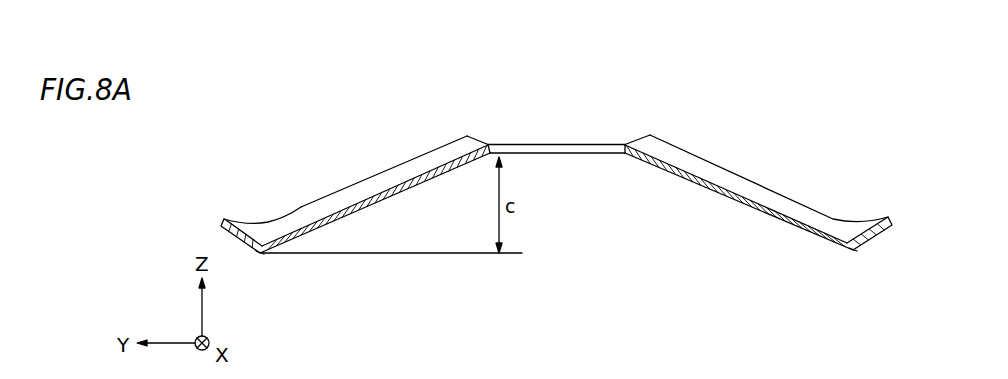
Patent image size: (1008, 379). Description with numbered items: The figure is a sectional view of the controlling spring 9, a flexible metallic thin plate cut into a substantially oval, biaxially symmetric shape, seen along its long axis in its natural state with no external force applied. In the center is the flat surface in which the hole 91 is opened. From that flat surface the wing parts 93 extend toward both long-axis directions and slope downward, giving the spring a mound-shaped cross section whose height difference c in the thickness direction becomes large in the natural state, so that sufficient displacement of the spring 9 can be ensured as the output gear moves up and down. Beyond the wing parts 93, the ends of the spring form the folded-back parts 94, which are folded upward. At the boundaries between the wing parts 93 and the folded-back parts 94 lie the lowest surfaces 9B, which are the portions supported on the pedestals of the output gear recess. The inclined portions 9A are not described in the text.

The controlling spring 9 is at (300, 87).
The inclined portion 9A is at (343, 188).
The lowest surfaces 9B is at (260, 256).
The hole 91 is at (488, 145).
The wing parts 93 is at (401, 176).
The folded-back parts 94 is at (252, 222).